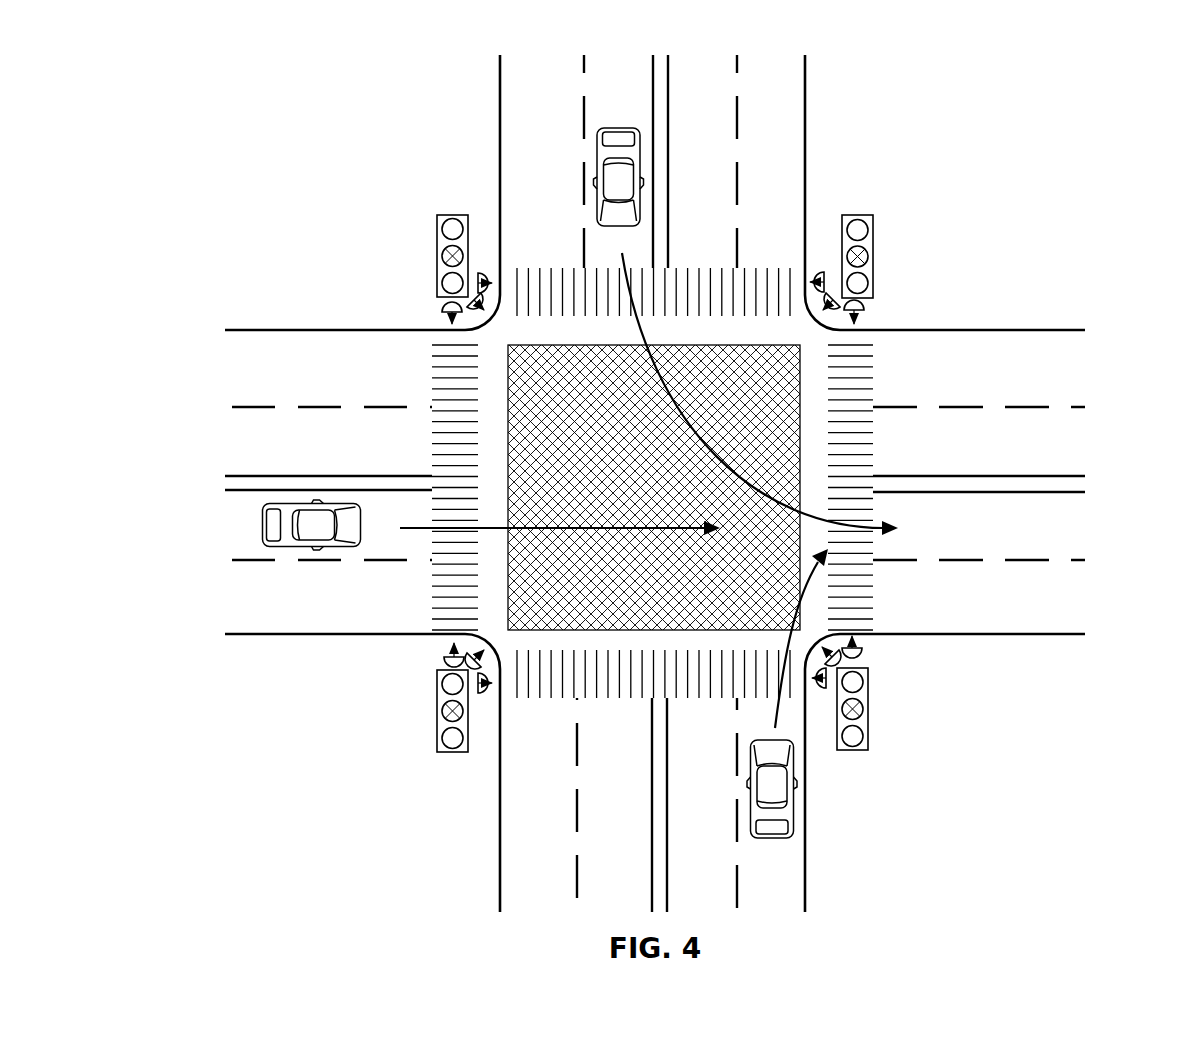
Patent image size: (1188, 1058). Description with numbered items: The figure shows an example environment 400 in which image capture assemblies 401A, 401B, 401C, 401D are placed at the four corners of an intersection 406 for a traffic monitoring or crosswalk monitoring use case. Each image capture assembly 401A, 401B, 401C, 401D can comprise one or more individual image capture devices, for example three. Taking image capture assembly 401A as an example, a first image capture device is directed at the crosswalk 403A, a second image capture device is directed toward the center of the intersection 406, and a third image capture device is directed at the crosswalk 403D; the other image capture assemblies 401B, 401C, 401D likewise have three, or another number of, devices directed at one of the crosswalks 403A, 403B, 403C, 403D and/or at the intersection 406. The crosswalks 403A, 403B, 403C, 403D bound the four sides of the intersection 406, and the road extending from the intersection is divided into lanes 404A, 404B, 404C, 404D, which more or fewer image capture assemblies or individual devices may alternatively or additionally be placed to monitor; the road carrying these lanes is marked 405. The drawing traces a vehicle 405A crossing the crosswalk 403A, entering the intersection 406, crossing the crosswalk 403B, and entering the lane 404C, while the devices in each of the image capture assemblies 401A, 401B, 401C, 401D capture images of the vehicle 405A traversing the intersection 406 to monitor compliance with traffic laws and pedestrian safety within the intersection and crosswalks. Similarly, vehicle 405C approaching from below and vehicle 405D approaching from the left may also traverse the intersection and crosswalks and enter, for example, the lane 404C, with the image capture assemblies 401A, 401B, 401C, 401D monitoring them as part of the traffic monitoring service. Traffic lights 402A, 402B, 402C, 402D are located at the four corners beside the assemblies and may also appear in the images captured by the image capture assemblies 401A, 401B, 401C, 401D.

The environment 400 is at (655, 476).
The image capture assembly 401A is at (437, 309).
The image capture assembly 401B is at (878, 310).
The image capture assembly 401C is at (870, 651).
The image capture assembly 401D is at (437, 657).
The traffic light 402A is at (432, 247).
The traffic light 402B is at (878, 256).
The traffic light 402C is at (873, 710).
The traffic light 402D is at (428, 711).
The crosswalk 403A is at (653, 292).
The crosswalk 403B is at (852, 487).
The crosswalk 403C is at (653, 674).
The crosswalk 403D is at (455, 487).
The lane 404A is at (979, 384).
The lane 404B is at (979, 452).
The lane 404C is at (979, 515).
The lane 404D is at (979, 584).
The road 405 is at (1007, 485).
The vehicle 405A is at (618, 120).
The vehicle 405C is at (775, 843).
The vehicle 405D is at (250, 522).
The intersection 406 is at (654, 487).